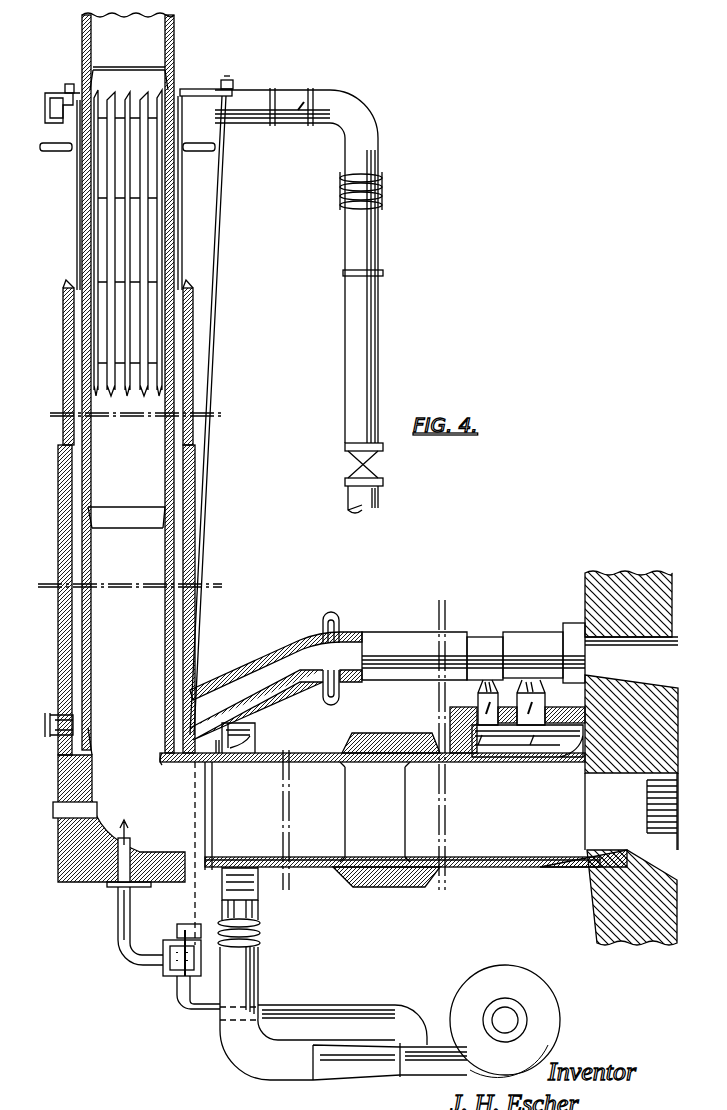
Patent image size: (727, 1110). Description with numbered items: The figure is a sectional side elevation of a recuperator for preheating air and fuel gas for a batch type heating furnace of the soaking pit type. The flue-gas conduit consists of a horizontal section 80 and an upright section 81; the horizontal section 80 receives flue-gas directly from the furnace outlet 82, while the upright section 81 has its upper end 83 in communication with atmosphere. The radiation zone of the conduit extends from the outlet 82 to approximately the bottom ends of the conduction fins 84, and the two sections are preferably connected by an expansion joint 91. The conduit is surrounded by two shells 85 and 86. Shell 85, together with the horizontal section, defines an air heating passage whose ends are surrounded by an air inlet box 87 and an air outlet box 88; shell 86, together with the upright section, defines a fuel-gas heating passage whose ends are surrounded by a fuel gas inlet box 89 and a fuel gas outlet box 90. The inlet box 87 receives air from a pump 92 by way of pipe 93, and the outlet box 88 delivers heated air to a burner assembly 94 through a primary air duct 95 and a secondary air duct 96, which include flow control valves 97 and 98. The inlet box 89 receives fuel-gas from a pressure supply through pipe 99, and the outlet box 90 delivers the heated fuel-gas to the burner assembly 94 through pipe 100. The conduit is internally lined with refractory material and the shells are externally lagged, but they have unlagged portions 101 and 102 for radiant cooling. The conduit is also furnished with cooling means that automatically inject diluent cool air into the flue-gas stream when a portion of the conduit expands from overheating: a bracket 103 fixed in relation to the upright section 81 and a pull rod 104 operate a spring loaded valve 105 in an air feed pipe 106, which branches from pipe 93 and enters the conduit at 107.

The horizontal section 80 is at (375, 812).
The upright section 81 is at (126, 497).
The furnace outlet 82 is at (588, 814).
The upper end 83 is at (128, 51).
The conduction fins 84 is at (156, 392).
The shell 85 is at (388, 745).
The shell 86 is at (196, 488).
The air inlet box 87 is at (256, 748).
The air outlet box 88 is at (503, 757).
The fuel gas inlet box 89 is at (66, 92).
The fuel gas outlet box 90 is at (75, 736).
The expansion joint 91 is at (216, 735).
The pump 92 is at (540, 1003).
The pipe 93 is at (261, 978).
The burner assembly 94 is at (528, 640).
The primary air duct 95 is at (478, 698).
The secondary air duct 96 is at (545, 698).
The flow control valve 97 is at (483, 748).
The flow control valve 98 is at (532, 748).
The pipe 99 is at (380, 258).
The pipe 100 is at (392, 640).
The unlagged portion 101 is at (310, 752).
The unlagged portion 102 is at (183, 215).
The bracket 103 is at (204, 85).
The pull rod 104 is at (213, 386).
The spring loaded valve 105 is at (175, 978).
The air feed pipe 106 is at (350, 1005).
The entry point 107 is at (130, 840).